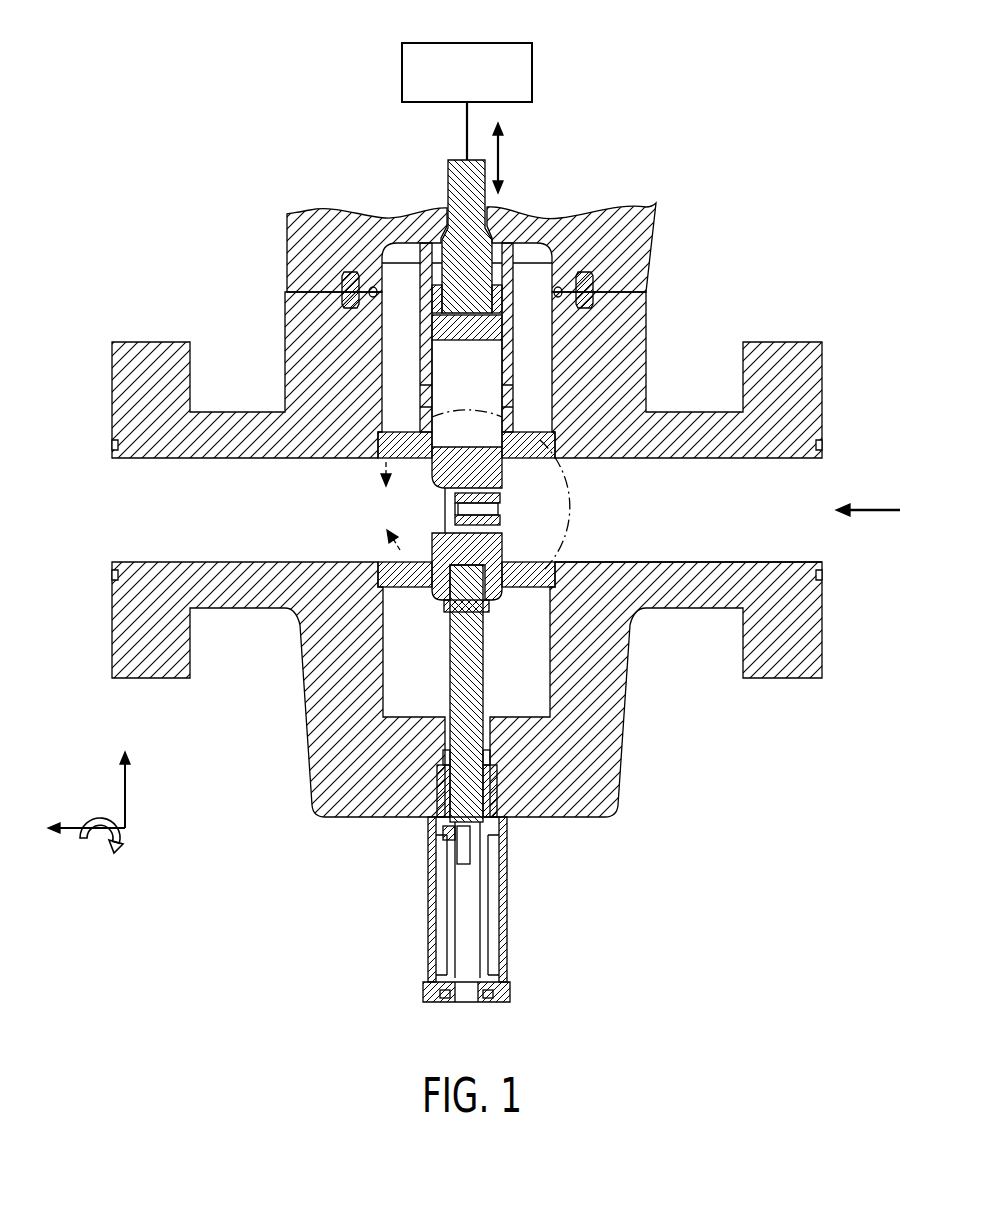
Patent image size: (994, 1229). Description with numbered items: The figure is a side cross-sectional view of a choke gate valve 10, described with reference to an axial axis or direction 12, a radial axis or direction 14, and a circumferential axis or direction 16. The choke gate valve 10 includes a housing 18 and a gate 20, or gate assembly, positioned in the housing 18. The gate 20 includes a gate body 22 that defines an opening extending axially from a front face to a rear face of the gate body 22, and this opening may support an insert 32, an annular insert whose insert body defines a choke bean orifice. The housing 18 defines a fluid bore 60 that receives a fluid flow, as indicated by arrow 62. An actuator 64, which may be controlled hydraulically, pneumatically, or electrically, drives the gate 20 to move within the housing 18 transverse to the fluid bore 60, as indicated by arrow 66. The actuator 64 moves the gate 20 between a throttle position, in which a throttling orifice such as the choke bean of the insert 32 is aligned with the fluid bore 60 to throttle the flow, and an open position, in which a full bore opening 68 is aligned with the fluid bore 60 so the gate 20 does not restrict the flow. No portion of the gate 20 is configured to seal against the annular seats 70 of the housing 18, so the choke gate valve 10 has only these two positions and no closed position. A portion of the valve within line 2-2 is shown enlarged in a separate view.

The choke gate valve 10 is at (489, 552).
The axial axis or direction 12 is at (77, 832).
The radial axis or direction 14 is at (127, 797).
The circumferential axis or direction 16 is at (108, 818).
The housing 18 is at (642, 330).
The gate 20 is at (397, 205).
The gate body 22 is at (465, 338).
The insert 32 is at (513, 503).
The line 2- 2 is at (399, 507).
The fluid bore 60 is at (678, 553).
The arrow 62 is at (870, 512).
The actuator 64 is at (470, 43).
The arrow 66 is at (500, 160).
The full bore opening 68 is at (485, 380).
The annular seats 70 is at (390, 428).